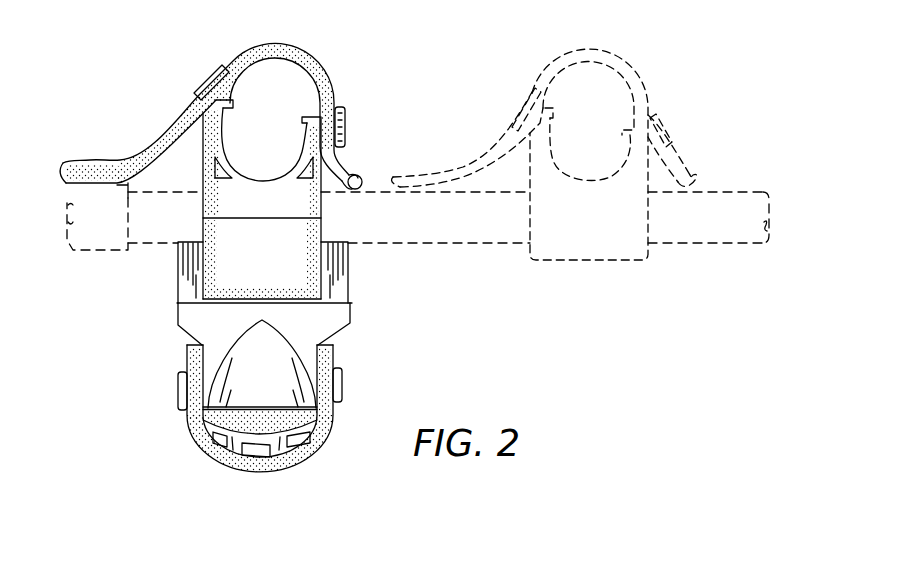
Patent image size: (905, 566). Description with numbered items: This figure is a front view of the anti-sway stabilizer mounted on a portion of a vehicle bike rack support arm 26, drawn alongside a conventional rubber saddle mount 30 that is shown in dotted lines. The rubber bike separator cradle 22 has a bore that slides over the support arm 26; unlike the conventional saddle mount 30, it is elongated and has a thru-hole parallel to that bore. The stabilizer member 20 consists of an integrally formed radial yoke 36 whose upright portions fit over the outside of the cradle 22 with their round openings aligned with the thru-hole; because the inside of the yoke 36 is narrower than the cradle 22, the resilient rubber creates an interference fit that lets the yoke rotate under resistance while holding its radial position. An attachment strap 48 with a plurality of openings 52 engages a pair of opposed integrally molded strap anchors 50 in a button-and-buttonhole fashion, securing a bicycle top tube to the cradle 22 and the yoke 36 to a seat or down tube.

The clip assembly 20 is at (370, 317).
The rubber bike separator cradle 22 is at (323, 227).
The vehicle bike rack support arm 26 is at (720, 243).
The saddle mount 30 is at (567, 260).
The radial yoke 36 is at (178, 333).
The attachment strap 48 is at (207, 463).
The strap anchors 50 is at (205, 78).
The openings 52 is at (463, 565).